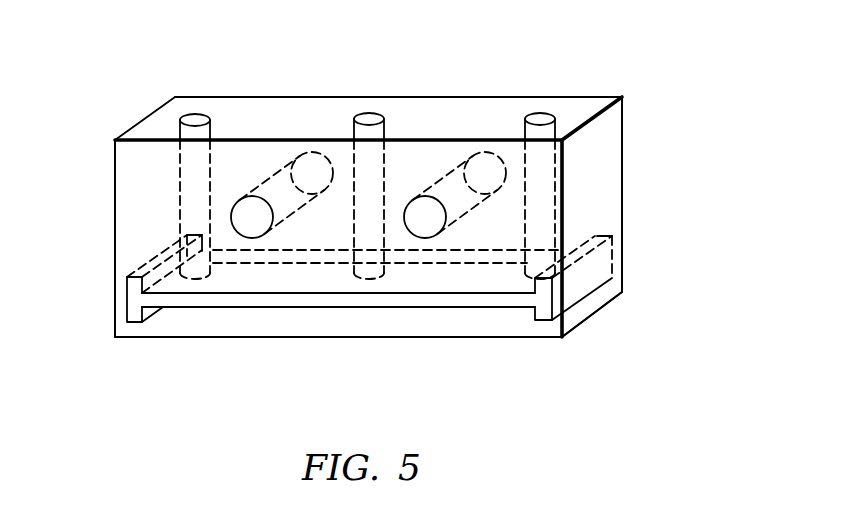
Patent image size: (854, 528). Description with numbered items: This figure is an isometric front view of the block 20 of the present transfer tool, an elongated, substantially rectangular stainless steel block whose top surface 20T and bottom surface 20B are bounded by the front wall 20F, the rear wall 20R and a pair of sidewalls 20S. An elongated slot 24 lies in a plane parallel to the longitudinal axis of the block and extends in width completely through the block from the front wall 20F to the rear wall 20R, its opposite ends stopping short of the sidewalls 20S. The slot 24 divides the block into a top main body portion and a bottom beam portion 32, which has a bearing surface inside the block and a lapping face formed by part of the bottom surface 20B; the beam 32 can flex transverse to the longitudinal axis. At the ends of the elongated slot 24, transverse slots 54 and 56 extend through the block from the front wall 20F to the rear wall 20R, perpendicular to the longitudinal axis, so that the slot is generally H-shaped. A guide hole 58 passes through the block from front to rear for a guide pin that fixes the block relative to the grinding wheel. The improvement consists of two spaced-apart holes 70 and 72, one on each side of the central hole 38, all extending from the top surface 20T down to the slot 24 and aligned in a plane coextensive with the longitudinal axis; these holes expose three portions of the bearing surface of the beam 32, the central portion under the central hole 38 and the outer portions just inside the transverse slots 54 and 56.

The block 20 is at (377, 206).
The front wall 20F is at (267, 150).
The top surface 20T is at (458, 113).
The rear wall 20R is at (515, 103).
The sidewalls 20S is at (115, 200).
The bottom surface 20B is at (519, 337).
The bottom beam portion 32 is at (420, 323).
The hole 70 is at (195, 115).
The central hole 38 is at (368, 113).
The hole 72 is at (542, 114).
The guide hole 58 is at (247, 197).
The transverse slot 56 is at (428, 197).
The transverse slot 54 is at (132, 296).
The elongated slot 24 is at (295, 300).